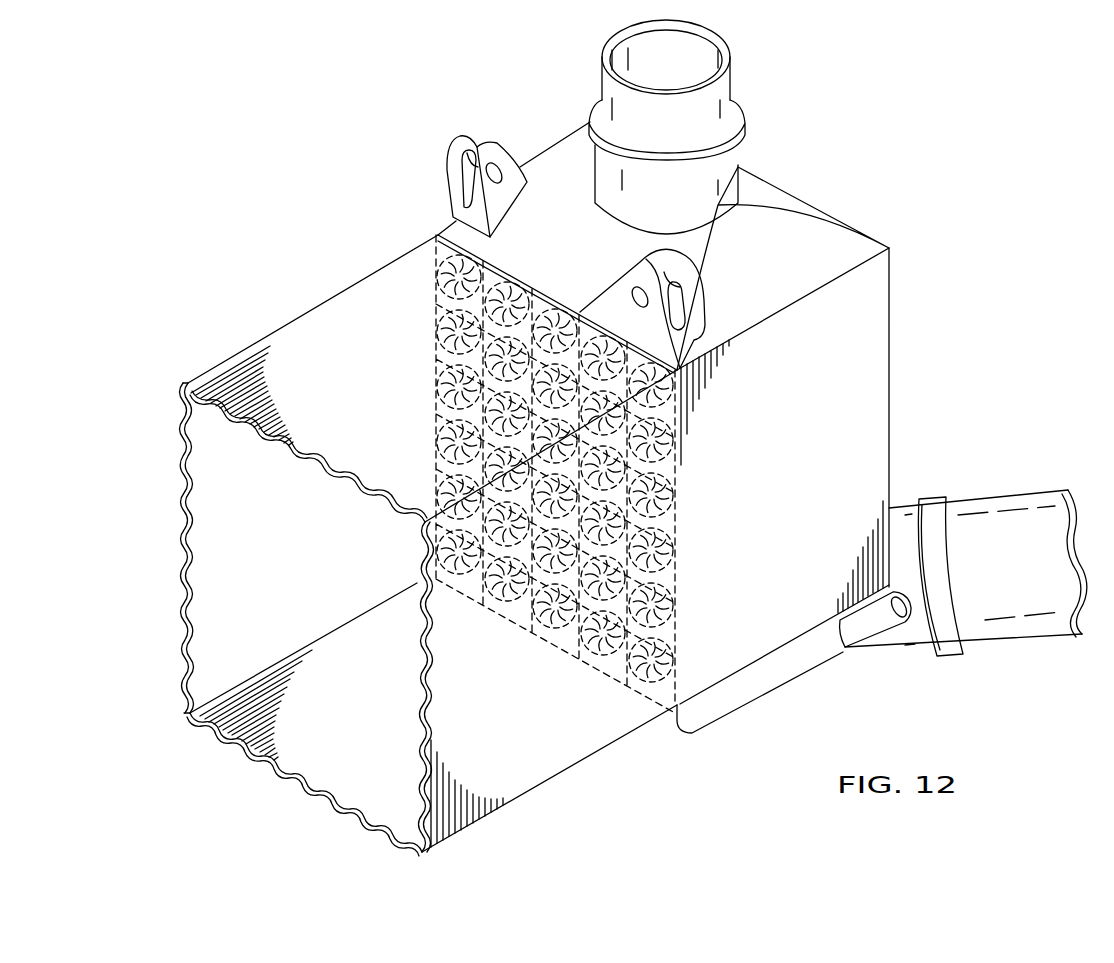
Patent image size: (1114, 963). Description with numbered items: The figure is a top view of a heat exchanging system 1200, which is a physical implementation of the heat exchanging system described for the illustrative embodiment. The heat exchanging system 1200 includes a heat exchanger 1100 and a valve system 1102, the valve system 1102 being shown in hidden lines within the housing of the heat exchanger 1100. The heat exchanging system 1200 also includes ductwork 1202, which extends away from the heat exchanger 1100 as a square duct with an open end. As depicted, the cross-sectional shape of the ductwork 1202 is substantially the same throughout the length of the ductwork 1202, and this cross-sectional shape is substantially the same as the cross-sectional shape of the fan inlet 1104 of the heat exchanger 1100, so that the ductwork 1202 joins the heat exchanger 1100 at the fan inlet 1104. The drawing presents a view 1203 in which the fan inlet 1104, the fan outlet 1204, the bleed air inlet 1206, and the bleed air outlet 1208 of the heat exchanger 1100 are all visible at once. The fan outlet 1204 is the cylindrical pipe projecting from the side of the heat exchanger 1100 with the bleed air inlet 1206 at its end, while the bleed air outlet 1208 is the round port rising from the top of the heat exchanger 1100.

The heat exchanger 1100 is at (855, 165).
The valve system 1102 is at (433, 393).
The fan inlet 1104 is at (653, 739).
The heat exchanging system 1200 is at (292, 187).
The ductwork 1202 is at (314, 309).
The view 1203 is at (168, 101).
The fan outlet 1204 is at (958, 469).
The bleed air inlet 1206 is at (1023, 648).
The bleed air outlet 1208 is at (600, 84).